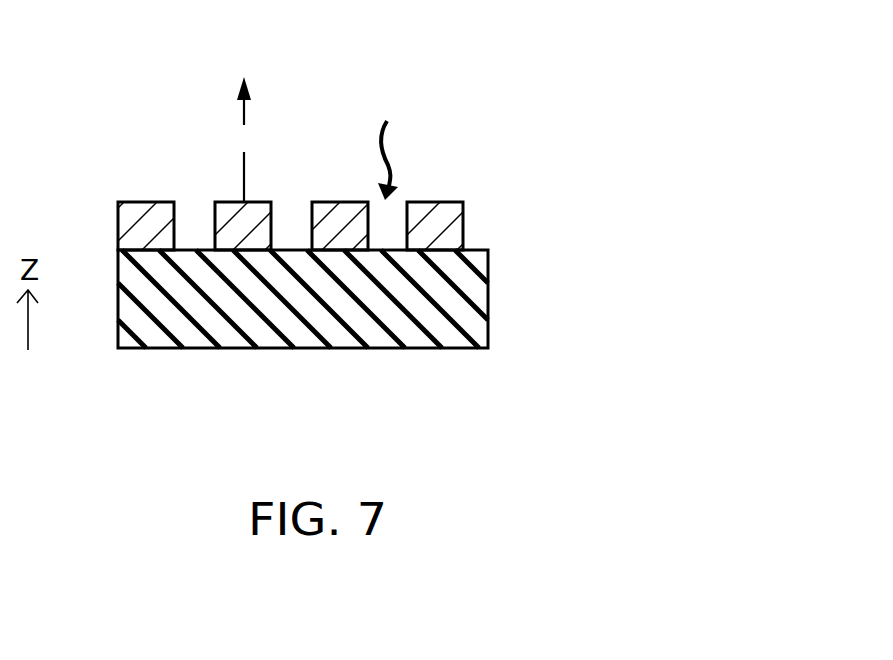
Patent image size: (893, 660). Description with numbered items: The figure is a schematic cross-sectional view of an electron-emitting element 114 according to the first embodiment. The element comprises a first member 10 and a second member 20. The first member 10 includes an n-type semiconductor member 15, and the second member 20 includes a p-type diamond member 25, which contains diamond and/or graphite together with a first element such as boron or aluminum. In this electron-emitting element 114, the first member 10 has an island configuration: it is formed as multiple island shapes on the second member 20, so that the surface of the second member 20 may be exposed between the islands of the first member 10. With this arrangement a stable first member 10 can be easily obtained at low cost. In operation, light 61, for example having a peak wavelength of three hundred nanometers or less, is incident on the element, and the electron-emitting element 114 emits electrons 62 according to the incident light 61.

The electron-emitting element 114 is at (537, 65).
The first member 10 is at (442, 238).
The n-type semiconductor member 15 is at (442, 213).
The second member 20 is at (445, 296).
The p-type diamond member 25 is at (445, 322).
The light 61 is at (388, 124).
The electrons 62 is at (243, 108).